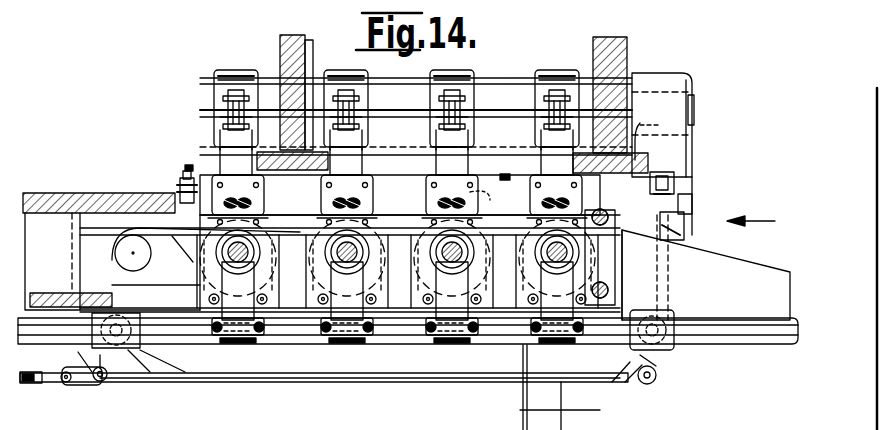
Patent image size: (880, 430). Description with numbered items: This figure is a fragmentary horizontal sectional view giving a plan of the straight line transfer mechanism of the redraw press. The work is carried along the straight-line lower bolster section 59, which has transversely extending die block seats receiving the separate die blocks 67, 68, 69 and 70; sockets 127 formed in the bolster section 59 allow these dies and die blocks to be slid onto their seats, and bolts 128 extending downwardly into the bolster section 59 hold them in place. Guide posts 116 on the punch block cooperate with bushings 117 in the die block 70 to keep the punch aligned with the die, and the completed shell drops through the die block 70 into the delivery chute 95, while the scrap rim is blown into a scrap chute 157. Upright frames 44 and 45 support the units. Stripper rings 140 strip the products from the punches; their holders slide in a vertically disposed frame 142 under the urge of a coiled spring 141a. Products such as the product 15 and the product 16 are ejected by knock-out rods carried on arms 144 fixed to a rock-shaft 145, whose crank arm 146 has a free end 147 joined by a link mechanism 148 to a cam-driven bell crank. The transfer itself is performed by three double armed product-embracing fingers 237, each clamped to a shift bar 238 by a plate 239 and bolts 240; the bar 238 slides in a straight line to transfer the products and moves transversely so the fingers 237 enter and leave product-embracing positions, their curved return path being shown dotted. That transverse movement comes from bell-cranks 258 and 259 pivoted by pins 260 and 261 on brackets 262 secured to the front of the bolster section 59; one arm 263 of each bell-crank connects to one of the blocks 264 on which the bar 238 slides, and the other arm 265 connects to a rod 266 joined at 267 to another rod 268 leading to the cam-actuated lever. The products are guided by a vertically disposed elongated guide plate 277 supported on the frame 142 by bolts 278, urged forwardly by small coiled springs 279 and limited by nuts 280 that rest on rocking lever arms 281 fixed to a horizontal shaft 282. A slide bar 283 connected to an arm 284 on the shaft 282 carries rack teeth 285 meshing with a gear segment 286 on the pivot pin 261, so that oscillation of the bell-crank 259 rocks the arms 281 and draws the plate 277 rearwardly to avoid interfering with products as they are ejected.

The product 15 is at (118, 267).
The product 16 is at (756, 211).
The frame 44 is at (303, 46).
The frame 45 is at (615, 60).
The lower bolster section 59 is at (140, 182).
The die block 67 is at (202, 282).
The die block 68 is at (249, 280).
The die block 69 is at (356, 280).
The die block 70 is at (522, 280).
The delivery chute 95 is at (562, 418).
The guide posts 116 is at (600, 255).
The bushings 117 is at (608, 290).
The sockets 127 is at (505, 340).
The bolts 128 is at (214, 305).
The stripper rings 140 is at (414, 214).
The coiled spring 141a is at (472, 209).
The frame 142 is at (380, 184).
The arm 144 is at (237, 165).
The rock-shaft 145 is at (214, 138).
The crank arm 146 is at (680, 165).
The free end 147 is at (693, 210).
The link mechanism 148 is at (690, 238).
The scrap chute 157 is at (768, 272).
The product-embracing fingers 237 is at (262, 318).
The shift bar 238 is at (390, 342).
The plate 239 is at (340, 342).
The bolts 240 is at (432, 340).
The bell-crank 258 is at (105, 386).
The bell-crank 259 is at (658, 378).
The pin 260 is at (90, 385).
The pivot pin 261 is at (625, 390).
The brackets 262 is at (74, 298).
The arm 263 is at (142, 372).
The blocks 264 is at (170, 375).
The arm 265 is at (100, 386).
The rod 266 is at (287, 384).
The connection 267 is at (70, 390).
The rod 268 is at (48, 386).
The guide plate 277 is at (188, 262).
The bolts 278 is at (186, 172).
The coiled spring 279 is at (492, 191).
The nuts 280 is at (183, 170).
The rocking lever arms 281 is at (266, 194).
The horizontal shaft 282 is at (651, 133).
The slide bar 283 is at (700, 250).
The arm 284 is at (675, 182).
The rack teeth 285 is at (672, 350).
The gear segment 286 is at (662, 352).